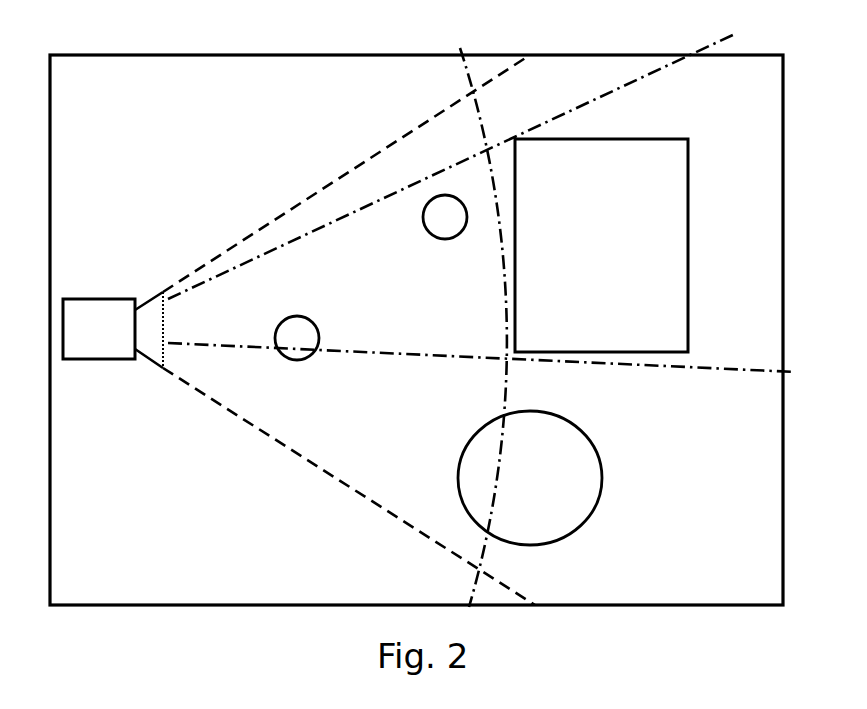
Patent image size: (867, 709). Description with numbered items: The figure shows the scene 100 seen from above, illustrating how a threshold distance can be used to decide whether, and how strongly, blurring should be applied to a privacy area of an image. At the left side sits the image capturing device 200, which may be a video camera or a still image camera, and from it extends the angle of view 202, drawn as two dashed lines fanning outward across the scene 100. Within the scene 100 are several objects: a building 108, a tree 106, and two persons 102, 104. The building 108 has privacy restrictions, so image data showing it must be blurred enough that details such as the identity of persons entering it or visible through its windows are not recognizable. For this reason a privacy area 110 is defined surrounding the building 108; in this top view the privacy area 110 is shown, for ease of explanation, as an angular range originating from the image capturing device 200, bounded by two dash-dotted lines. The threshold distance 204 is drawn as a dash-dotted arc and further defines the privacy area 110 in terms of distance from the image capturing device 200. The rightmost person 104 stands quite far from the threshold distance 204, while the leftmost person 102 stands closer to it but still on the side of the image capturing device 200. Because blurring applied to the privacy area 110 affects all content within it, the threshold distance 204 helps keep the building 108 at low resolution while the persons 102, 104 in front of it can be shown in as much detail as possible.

The scene 100 is at (688, 606).
The person 102 is at (425, 232).
The person 104 is at (295, 360).
The tree 106 is at (595, 508).
The building 108 is at (620, 139).
The privacy area 110 is at (683, 57).
The image capturing device 200 is at (113, 299).
The angle of view 202 is at (278, 212).
The threshold distance 204 is at (506, 293).